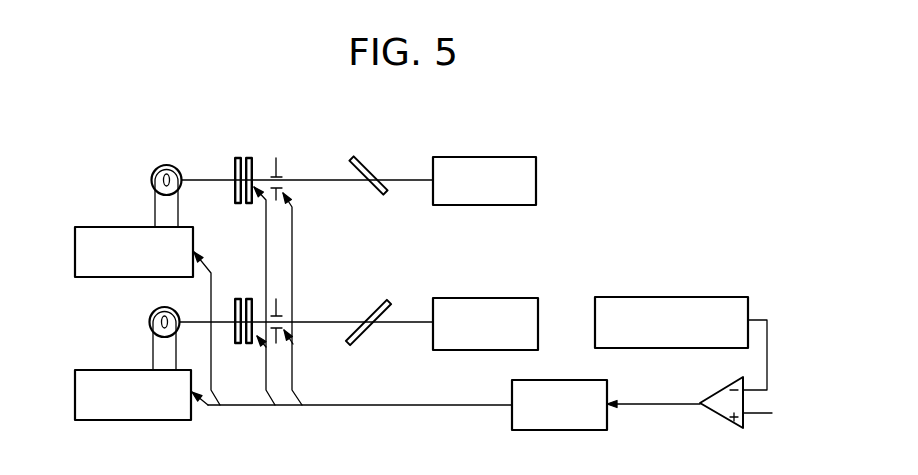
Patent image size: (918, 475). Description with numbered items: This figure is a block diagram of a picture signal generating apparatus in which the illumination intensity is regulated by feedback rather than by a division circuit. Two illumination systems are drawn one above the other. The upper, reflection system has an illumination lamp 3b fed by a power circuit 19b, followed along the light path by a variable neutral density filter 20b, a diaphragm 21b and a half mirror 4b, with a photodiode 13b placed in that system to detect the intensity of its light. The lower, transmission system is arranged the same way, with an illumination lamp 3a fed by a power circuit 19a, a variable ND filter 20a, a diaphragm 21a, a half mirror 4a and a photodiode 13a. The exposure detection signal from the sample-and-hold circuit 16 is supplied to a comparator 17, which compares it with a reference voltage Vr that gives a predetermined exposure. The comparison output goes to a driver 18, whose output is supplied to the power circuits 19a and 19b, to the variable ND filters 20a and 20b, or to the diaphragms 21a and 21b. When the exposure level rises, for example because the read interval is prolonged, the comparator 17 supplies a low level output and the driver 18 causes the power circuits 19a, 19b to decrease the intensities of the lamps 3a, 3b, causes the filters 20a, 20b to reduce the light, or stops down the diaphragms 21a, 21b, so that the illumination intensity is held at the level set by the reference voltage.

The illumination lamp 3a is at (151, 313).
The illumination lamp 3b is at (168, 165).
The half mirror 4a is at (355, 346).
The half mirror 4b is at (373, 163).
The photodiode 13a is at (453, 350).
The photodiode 13b is at (537, 157).
The sample-and-hold circuit 16 is at (708, 297).
The comparator 17 is at (713, 407).
The driver 18 is at (514, 422).
The power circuit 19a is at (100, 370).
The power circuit 19b is at (194, 227).
The variable neutral density filter 20a is at (256, 291).
The variable neutral density filter 20b is at (256, 152).
The diaphragm 21a is at (280, 305).
The diaphragm 21b is at (279, 158).